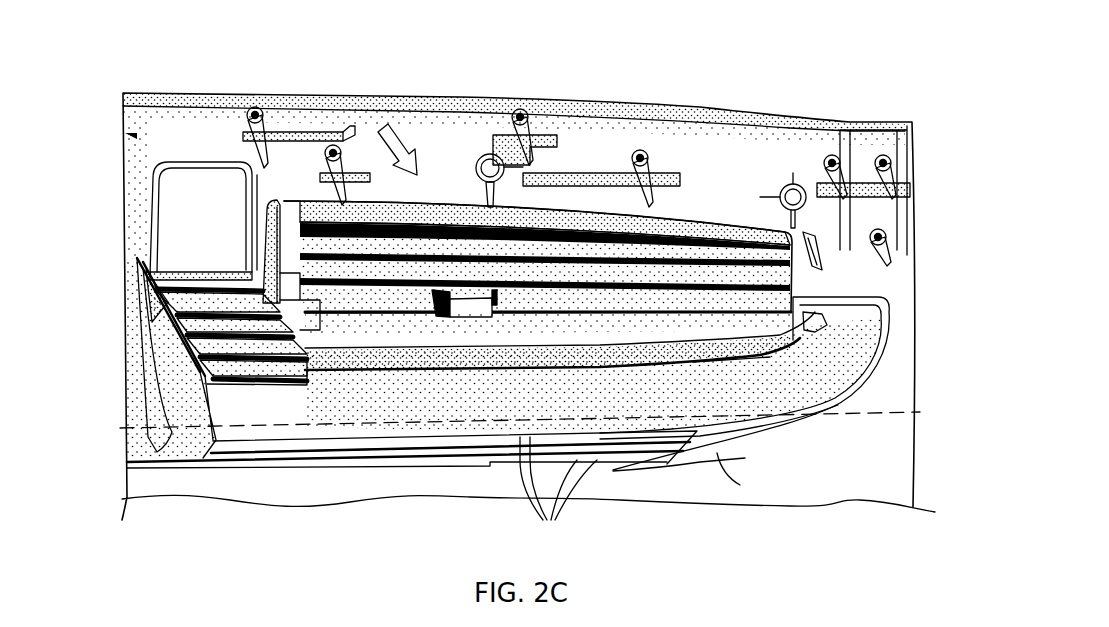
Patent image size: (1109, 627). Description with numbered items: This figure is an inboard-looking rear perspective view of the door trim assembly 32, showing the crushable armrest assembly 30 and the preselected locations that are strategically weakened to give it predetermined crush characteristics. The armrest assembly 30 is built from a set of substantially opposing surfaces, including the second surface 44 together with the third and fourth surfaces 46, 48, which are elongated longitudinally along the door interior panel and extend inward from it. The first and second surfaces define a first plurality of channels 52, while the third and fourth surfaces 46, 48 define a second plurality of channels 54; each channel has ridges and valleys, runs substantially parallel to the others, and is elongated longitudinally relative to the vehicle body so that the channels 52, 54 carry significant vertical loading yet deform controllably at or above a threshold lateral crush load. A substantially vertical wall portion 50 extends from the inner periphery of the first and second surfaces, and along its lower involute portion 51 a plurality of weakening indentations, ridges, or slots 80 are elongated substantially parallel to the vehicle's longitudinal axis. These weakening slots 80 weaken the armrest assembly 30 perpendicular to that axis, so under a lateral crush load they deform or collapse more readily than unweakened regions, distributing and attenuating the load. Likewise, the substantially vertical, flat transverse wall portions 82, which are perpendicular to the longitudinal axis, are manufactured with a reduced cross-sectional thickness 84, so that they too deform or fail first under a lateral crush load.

The crushable armrest assembly 30 is at (856, 449).
The door trim assembly 32 is at (786, 112).
The second surface 44 is at (282, 238).
The third surface 46 is at (220, 272).
The fourth surface 48 is at (193, 305).
The substantially vertical wall portion 50 is at (843, 363).
The lower involute portion 51 is at (740, 485).
The first plurality of channels 52 is at (385, 335).
The second plurality of channels 54 is at (230, 402).
The weakening slots 80 is at (558, 494).
The transverse wall portions 82 is at (148, 302).
The reduced cross-sectional thickness 84 is at (236, 405).